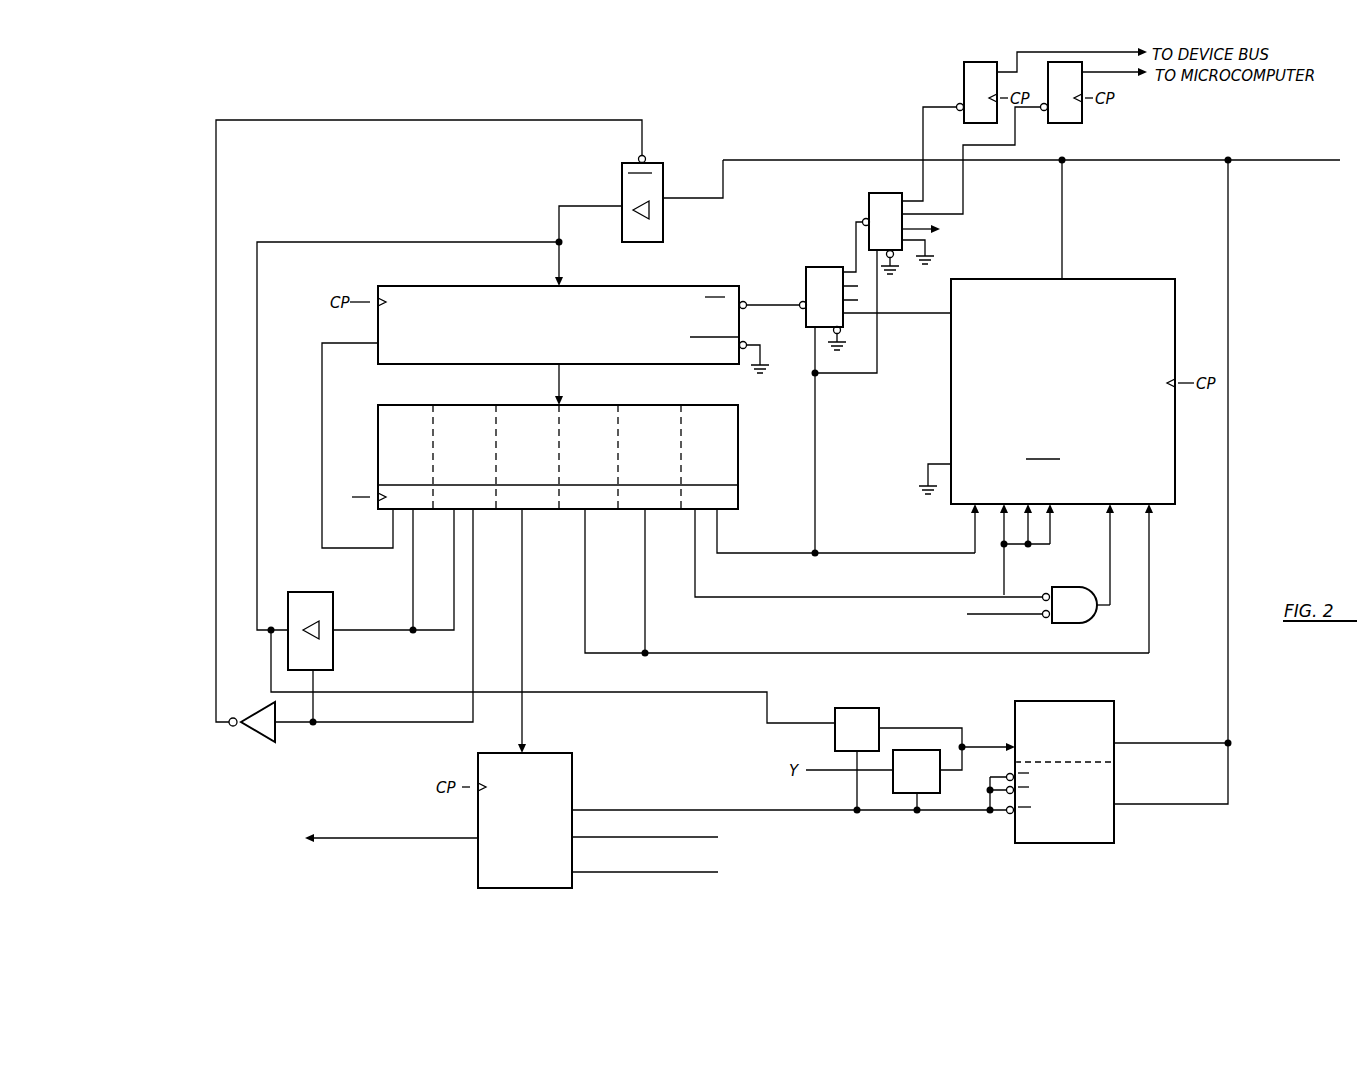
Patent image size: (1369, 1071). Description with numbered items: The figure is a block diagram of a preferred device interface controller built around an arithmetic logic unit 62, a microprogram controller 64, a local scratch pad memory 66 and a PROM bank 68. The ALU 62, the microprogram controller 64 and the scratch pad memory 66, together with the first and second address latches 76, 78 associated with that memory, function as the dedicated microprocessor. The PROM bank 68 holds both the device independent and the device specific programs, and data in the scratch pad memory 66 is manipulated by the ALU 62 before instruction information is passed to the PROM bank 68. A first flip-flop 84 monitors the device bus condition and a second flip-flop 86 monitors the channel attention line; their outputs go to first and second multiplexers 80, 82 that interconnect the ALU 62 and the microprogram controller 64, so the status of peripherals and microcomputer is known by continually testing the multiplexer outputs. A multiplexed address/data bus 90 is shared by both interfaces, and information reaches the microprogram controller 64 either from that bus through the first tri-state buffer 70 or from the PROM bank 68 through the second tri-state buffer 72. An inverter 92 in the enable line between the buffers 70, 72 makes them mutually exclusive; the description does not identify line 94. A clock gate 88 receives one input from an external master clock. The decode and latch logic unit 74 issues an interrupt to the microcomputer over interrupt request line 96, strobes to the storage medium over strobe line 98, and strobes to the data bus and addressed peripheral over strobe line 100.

The arithmetic logic unit 62 is at (1127, 280).
The microprogram controller 64 is at (468, 288).
The scratch pad memory 66 is at (1100, 835).
The PROM bank 68 is at (436, 405).
The first tri-state buffer 70 is at (620, 180).
The second tri-state buffer 72 is at (300, 592).
The decode and latch logic unit 74 is at (478, 765).
The first address latch 76 is at (878, 710).
The second address latch 78 is at (918, 750).
The first multiplexer 80 is at (883, 195).
The second multiplexer 82 is at (820, 268).
The first flip-flop 84 is at (982, 62).
The second flip-flop 86 is at (1072, 124).
The clock gate 88 is at (1071, 590).
The multiplexed address/data bus 90 is at (1167, 169).
The inverter 92 is at (258, 728).
The line 94 is at (368, 718).
The interrupt request line 96 is at (685, 878).
The strobe line 98 is at (685, 845).
The strobe line 100 is at (403, 848).